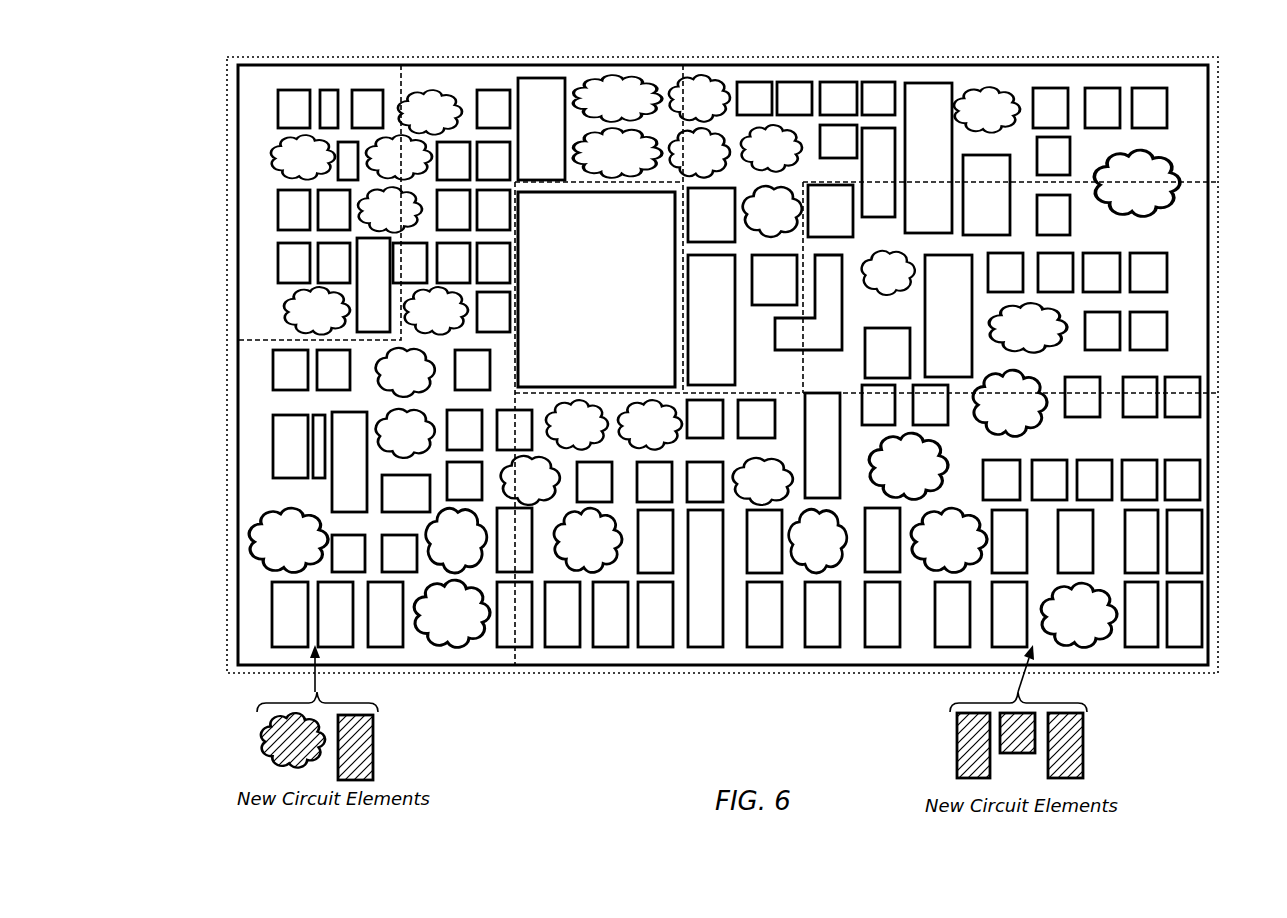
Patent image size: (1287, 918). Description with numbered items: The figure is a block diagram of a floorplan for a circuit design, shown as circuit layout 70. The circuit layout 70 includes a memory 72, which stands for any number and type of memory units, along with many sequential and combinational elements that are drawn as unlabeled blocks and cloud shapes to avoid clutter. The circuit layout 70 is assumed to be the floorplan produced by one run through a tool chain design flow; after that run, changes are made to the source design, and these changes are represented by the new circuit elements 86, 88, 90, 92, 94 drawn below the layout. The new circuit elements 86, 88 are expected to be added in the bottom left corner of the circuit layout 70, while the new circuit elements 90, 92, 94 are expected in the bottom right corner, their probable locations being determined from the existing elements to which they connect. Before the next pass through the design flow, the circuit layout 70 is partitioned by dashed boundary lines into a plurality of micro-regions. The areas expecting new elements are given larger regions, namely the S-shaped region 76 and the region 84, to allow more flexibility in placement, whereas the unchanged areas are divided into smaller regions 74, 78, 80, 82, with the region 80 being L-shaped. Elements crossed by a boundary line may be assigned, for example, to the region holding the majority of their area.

The circuit layout 70 is at (272, 97).
The memory 72 is at (587, 308).
The region 74 is at (227, 268).
The region 76 is at (572, 57).
The region 78 is at (652, 187).
The region 80 is at (862, 57).
The region 82 is at (1218, 288).
The region 84 is at (703, 673).
The new circuit element 86 is at (260, 740).
The new circuit element 88 is at (373, 740).
The new circuit element 90 is at (957, 745).
The new circuit element 92 is at (1017, 756).
The new circuit element 94 is at (1083, 745).